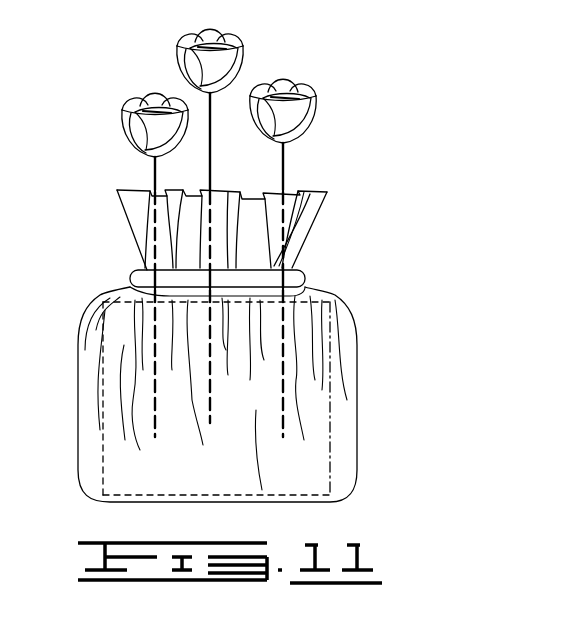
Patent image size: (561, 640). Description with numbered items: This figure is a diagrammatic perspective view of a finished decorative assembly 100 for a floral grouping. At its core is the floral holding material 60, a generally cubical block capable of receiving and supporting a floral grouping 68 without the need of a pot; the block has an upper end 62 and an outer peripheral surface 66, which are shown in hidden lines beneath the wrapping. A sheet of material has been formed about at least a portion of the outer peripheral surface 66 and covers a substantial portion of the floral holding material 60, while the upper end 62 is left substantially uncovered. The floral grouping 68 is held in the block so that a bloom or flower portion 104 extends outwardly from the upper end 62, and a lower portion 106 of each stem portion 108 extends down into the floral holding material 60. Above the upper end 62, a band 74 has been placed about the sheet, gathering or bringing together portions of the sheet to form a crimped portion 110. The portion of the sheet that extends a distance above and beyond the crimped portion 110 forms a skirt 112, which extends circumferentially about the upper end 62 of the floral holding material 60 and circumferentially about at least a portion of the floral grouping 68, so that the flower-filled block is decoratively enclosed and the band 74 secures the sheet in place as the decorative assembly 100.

The floral holding material 60 is at (243, 373).
The upper end 62 is at (118, 295).
The outer peripheral surface 66 is at (330, 455).
The floral grouping 68 is at (264, 223).
The band 74 is at (305, 277).
The decorative assembly 100 is at (267, 251).
The bloom or flower portion 104 is at (183, 47).
The lower portion 106 is at (283, 403).
The stem portion 108 is at (295, 269).
The crimped portion 110 is at (263, 258).
The skirt 112 is at (125, 189).